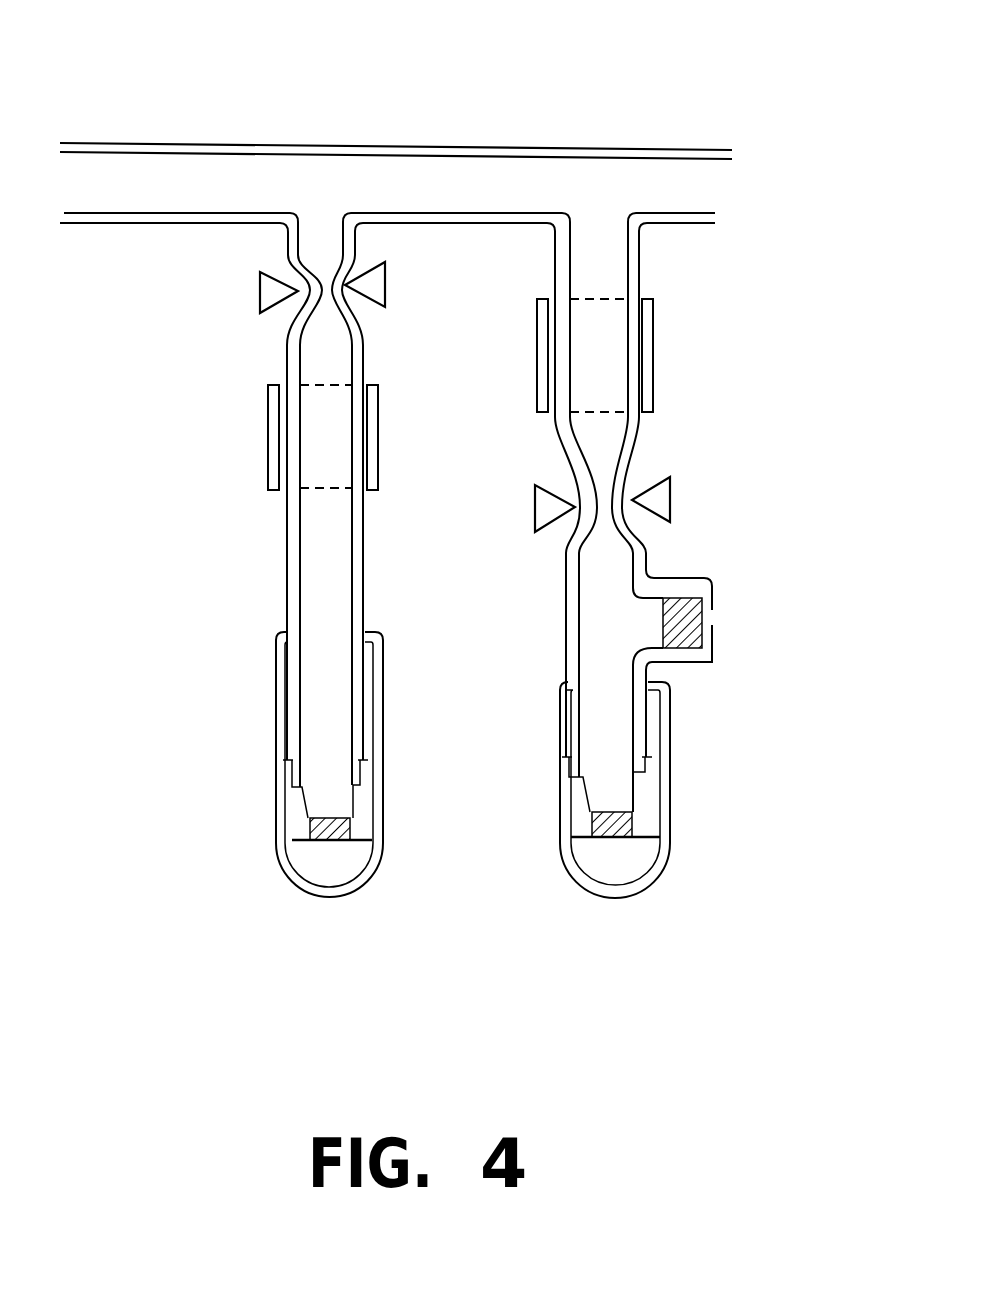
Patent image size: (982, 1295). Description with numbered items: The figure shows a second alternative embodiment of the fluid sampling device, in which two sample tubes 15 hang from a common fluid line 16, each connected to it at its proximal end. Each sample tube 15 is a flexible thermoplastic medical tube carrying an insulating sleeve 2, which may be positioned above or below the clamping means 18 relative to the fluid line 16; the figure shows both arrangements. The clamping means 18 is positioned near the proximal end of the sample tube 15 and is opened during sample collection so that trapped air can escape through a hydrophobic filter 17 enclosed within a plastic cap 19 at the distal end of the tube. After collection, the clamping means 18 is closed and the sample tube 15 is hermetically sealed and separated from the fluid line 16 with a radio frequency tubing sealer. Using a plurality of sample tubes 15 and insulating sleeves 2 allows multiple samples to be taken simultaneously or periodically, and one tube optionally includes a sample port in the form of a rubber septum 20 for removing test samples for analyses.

The insulating sleeve 2 is at (320, 437).
The sample tube 15 is at (322, 555).
The fluid line 16 is at (458, 173).
The hydrophobic filter 17 is at (335, 840).
The clamping means 18 is at (230, 299).
The plastic cap 19 is at (277, 815).
The rubber septum 20 is at (704, 622).